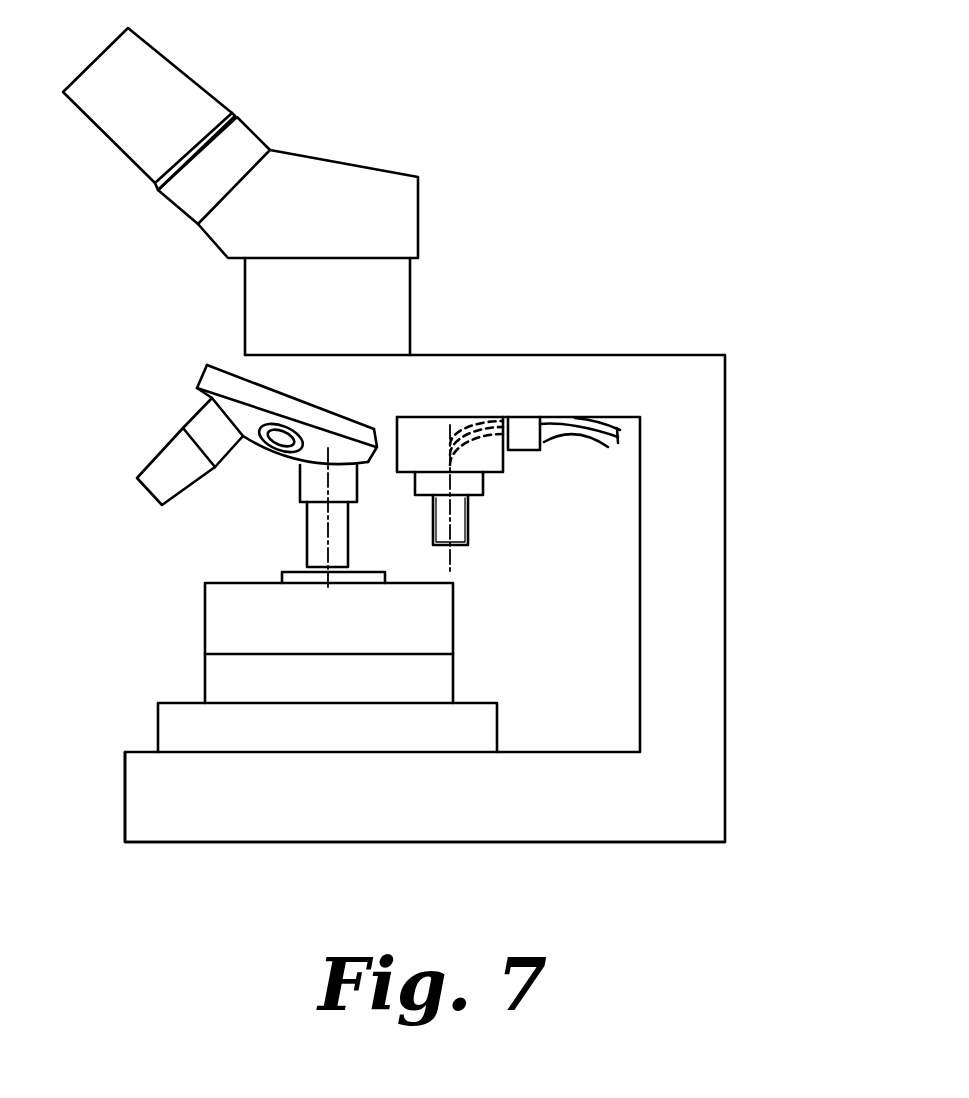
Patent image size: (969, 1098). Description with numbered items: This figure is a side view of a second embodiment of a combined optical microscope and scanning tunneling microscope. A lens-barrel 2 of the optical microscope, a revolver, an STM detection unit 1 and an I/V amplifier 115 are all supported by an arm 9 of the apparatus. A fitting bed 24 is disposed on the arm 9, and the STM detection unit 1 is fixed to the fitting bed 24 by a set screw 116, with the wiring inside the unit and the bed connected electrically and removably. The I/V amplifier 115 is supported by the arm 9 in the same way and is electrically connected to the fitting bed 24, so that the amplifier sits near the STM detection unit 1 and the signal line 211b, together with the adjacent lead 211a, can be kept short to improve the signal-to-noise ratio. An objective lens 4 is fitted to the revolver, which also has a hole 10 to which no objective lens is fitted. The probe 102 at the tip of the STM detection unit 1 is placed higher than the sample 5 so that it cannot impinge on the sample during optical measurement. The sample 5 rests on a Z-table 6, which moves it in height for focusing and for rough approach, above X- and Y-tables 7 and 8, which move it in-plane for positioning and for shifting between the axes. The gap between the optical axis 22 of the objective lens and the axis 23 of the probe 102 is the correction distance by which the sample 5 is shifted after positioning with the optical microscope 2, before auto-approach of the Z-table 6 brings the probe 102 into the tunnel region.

The STM detection unit 1 is at (462, 518).
The lens-barrel 2 is at (403, 222).
The objective lens 4 is at (155, 468).
The sample 5 is at (298, 580).
The Z-table 6 is at (230, 630).
The X-table 7 is at (240, 682).
The Y-table 8 is at (212, 722).
The arm 9 is at (698, 412).
The hole 10 is at (208, 407).
The optical axis 22 is at (300, 458).
The axis of the probe 23 is at (448, 443).
The fitting bed 24 is at (422, 447).
The probe 102 is at (452, 547).
The I/V amplifier 115 is at (540, 418).
The set screw 116 is at (435, 482).
The light guide 211a is at (606, 417).
The signal line 211b is at (540, 446).